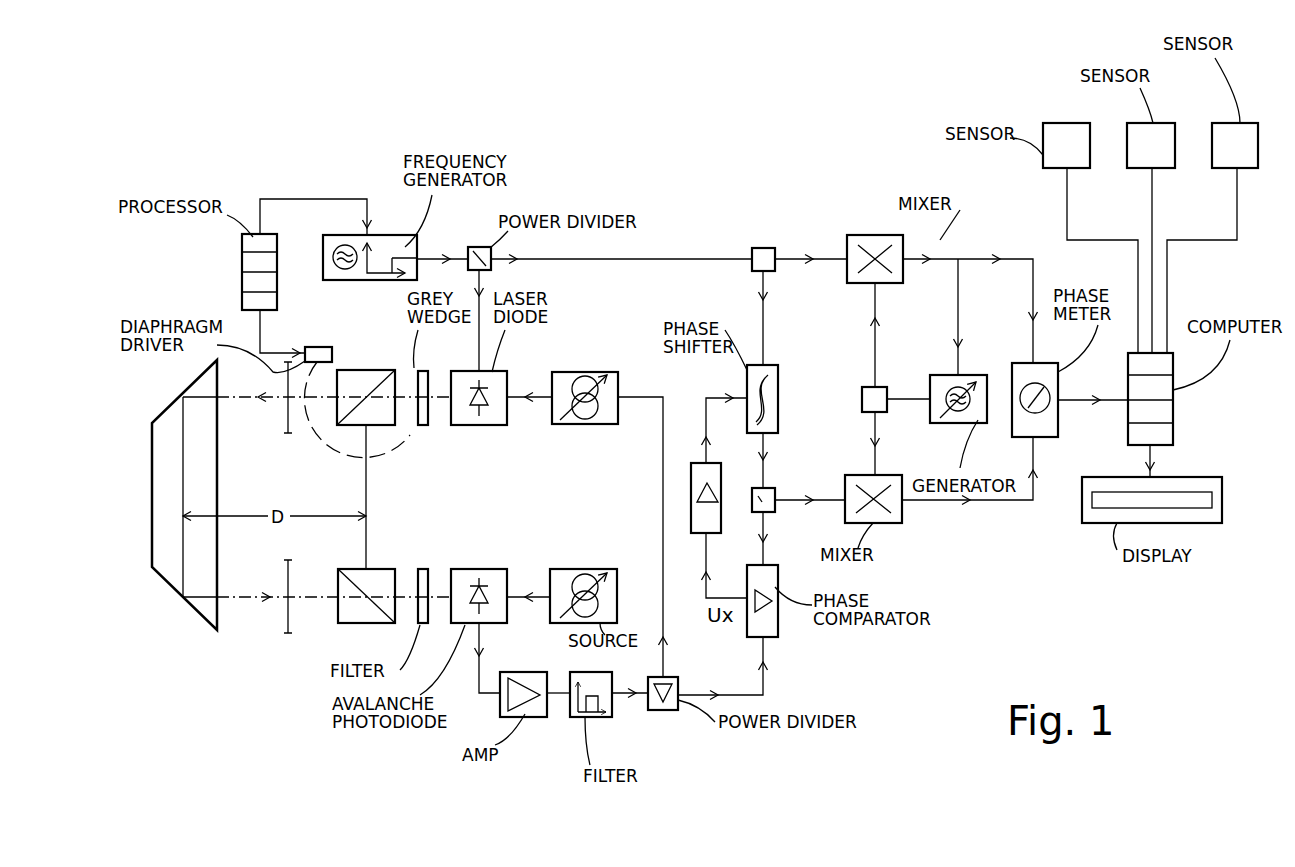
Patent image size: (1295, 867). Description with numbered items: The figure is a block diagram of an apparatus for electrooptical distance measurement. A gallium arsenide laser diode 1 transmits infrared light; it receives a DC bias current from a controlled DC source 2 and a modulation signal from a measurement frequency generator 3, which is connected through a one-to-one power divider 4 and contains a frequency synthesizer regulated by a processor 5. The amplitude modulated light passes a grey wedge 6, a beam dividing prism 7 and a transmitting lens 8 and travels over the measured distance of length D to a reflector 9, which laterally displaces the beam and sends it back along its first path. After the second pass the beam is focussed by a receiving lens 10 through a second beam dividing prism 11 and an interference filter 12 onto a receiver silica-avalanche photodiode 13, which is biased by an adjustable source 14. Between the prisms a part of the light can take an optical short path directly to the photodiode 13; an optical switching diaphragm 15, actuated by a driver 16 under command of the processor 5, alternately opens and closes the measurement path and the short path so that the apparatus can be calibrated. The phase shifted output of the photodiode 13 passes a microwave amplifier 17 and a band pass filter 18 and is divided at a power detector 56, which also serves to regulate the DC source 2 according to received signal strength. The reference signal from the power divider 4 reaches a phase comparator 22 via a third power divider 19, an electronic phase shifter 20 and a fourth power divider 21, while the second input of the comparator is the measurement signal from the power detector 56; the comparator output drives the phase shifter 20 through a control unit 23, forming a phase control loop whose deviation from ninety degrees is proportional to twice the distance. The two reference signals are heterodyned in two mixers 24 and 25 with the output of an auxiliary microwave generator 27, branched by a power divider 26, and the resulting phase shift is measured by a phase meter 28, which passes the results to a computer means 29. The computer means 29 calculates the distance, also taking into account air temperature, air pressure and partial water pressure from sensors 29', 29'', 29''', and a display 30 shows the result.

The laser diode 1 is at (495, 414).
The controlled DC source 2 is at (567, 374).
The measurement frequency generator 3 is at (383, 245).
The power divider 4 is at (477, 247).
The processor 5 is at (242, 246).
The grey wedge 6 is at (420, 372).
The beam dividing prism 7 is at (353, 372).
The transmitting lens 8 is at (300, 420).
The reflector 9 is at (165, 570).
The receiving lens 10 is at (288, 620).
The second beam dividing prism 11 is at (347, 610).
The interference filter 12 is at (421, 569).
The receiver silica-avalanche photodiode 13 is at (470, 575).
The adjustable source 14 is at (565, 580).
The optical switching diaphragm 15 is at (410, 440).
The driver 16 is at (318, 350).
The microwave amplifier 17 is at (530, 712).
The band pass filter 18 is at (598, 717).
The third power divider 19 is at (763, 250).
The electronic phase shifter 20 is at (772, 372).
The fourth power divider 21 is at (762, 506).
The phase comparator 22 is at (770, 625).
The control unit 23 is at (700, 478).
The mixer 24 is at (872, 240).
The mixer 25 is at (890, 510).
The power divider 26 is at (868, 393).
The auxiliary microwave generator 27 is at (955, 418).
The phase meter 28 is at (1045, 370).
The computer means 29 is at (1175, 395).
The air temperature sensor 29' is at (1051, 129).
The air pressure sensor 29'' is at (1136, 129).
The partial water pressure sensor 29''' is at (1218, 129).
The display 30 is at (1200, 500).
The power detector 56 is at (678, 712).